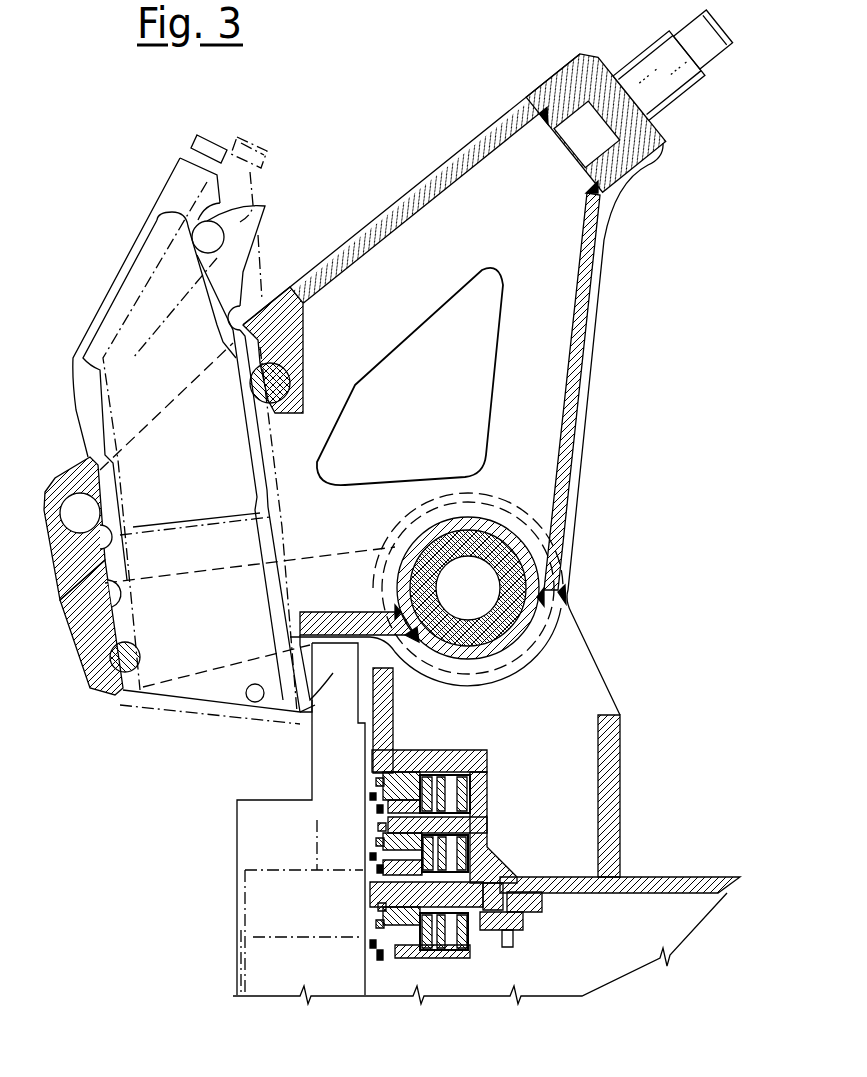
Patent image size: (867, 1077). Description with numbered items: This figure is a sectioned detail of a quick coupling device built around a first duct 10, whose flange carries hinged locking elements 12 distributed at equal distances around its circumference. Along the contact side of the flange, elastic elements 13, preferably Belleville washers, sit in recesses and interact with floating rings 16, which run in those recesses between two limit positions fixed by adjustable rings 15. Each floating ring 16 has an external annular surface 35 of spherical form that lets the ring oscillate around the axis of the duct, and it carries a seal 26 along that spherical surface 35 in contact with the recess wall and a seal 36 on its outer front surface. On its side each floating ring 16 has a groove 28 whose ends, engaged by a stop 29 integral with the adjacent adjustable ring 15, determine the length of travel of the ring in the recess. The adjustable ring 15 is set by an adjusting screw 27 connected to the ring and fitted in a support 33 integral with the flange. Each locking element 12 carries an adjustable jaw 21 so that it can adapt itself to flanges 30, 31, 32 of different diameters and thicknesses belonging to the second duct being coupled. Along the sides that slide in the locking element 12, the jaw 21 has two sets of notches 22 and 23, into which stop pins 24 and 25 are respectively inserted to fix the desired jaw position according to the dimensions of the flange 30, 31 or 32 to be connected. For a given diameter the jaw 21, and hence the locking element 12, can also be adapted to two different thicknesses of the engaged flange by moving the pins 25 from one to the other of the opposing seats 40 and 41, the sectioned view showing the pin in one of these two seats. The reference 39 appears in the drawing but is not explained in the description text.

The first duct 10 is at (667, 873).
The locking element 12 is at (400, 250).
The elastic element 13 is at (457, 803).
The adjustable ring 15 is at (450, 797).
The floating ring 16 is at (413, 793).
The adjustable jaw 21 is at (133, 347).
The notches 22 is at (90, 562).
The notches 23 is at (227, 223).
The stop pin 24 is at (108, 688).
The stop pin 25 is at (298, 337).
The seal 26 is at (385, 775).
The adjusting screw 27 is at (370, 797).
The groove 28 is at (390, 777).
The stop 29 is at (450, 773).
The flange 30 is at (295, 720).
The flange 31 is at (325, 784).
The flange 32 is at (330, 895).
The support 33 is at (377, 808).
The external annular surface 35 is at (400, 790).
The seal 36 is at (376, 780).
The stop 39 is at (380, 858).
The seat 40 is at (77, 493).
The seat 41 is at (293, 374).